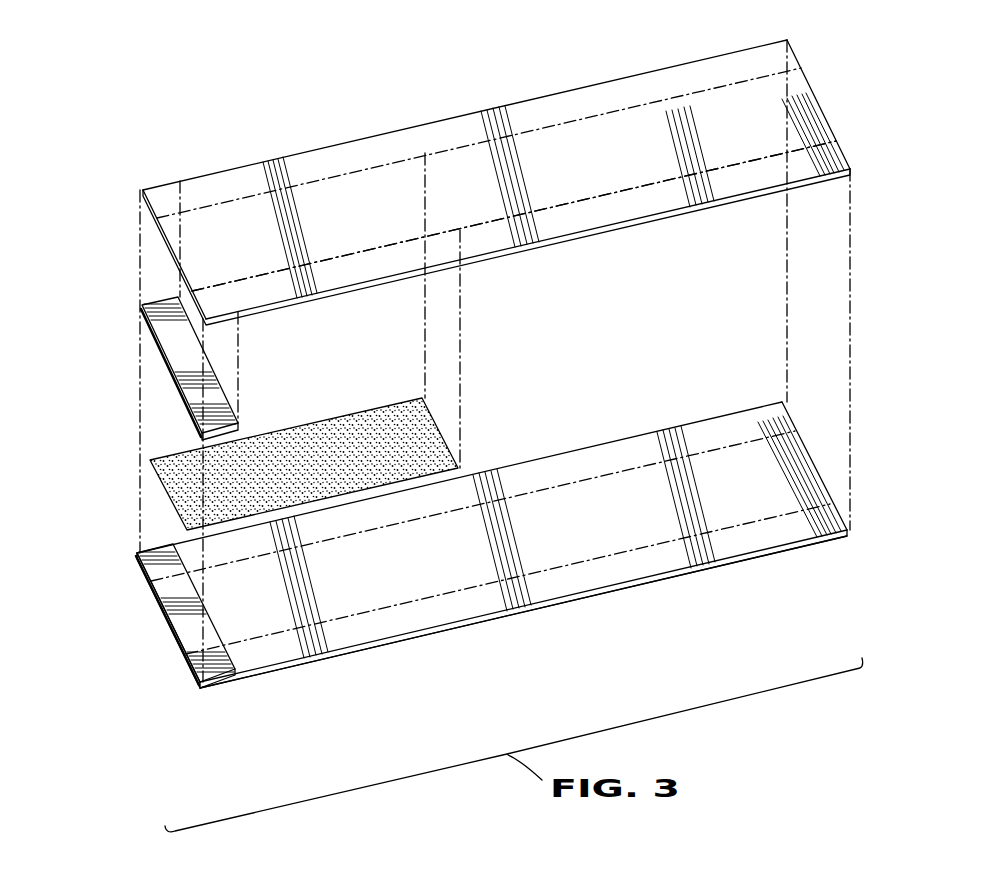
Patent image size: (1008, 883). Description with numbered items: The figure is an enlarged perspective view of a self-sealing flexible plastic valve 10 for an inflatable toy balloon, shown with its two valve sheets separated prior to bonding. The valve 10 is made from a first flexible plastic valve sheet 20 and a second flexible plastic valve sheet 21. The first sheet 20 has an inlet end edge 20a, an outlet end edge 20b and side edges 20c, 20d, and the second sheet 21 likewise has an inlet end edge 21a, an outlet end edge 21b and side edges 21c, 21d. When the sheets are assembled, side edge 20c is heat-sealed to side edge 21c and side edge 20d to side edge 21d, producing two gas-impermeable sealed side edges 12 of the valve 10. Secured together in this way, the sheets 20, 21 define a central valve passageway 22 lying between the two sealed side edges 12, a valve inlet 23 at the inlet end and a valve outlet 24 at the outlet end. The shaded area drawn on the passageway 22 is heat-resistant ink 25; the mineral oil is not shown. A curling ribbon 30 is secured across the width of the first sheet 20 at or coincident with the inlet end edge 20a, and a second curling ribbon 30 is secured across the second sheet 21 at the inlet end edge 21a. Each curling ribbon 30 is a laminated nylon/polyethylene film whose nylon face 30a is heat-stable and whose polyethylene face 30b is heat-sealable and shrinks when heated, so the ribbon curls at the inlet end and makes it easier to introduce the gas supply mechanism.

The self-sealing flexible plastic valve 10 is at (446, 638).
The sealed side edge 12 is at (622, 82).
The first flexible plastic valve sheet 20 is at (490, 103).
The inlet end edge of first valve sheet 20a is at (162, 243).
The outlet end edge of first valve sheet 20b is at (816, 95).
The side edge of first valve sheet 20c is at (374, 136).
The side edge of first valve sheet 20d is at (570, 238).
The second flexible plastic valve sheet 21 is at (578, 598).
The inlet end edge of second valve sheet 21a is at (180, 642).
The outlet end edge of second valve sheet 21b is at (817, 467).
The side edge of second valve sheet 21c is at (505, 466).
The side edge of second valve sheet 21d is at (642, 580).
The valve passageway 22 is at (631, 185).
The valve inlet 23 is at (158, 400).
The valve outlet 24 is at (862, 258).
The heat-resistant ink 25 is at (345, 428).
The curling ribbon 30 is at (158, 348).
The heat-stable face of curling ribbon 30a is at (163, 598).
The heat-sealable face of curling ribbon 30b is at (178, 367).